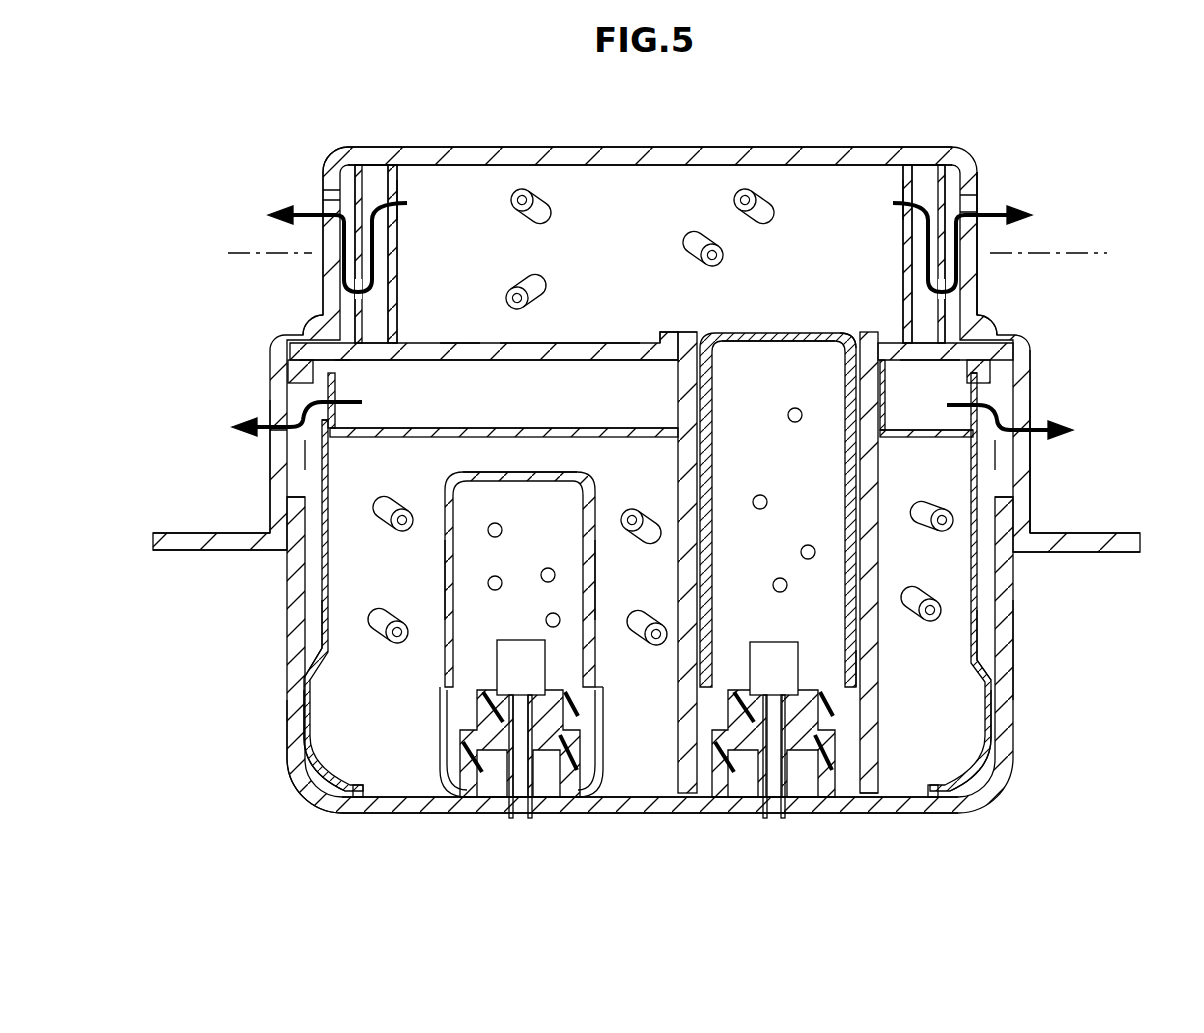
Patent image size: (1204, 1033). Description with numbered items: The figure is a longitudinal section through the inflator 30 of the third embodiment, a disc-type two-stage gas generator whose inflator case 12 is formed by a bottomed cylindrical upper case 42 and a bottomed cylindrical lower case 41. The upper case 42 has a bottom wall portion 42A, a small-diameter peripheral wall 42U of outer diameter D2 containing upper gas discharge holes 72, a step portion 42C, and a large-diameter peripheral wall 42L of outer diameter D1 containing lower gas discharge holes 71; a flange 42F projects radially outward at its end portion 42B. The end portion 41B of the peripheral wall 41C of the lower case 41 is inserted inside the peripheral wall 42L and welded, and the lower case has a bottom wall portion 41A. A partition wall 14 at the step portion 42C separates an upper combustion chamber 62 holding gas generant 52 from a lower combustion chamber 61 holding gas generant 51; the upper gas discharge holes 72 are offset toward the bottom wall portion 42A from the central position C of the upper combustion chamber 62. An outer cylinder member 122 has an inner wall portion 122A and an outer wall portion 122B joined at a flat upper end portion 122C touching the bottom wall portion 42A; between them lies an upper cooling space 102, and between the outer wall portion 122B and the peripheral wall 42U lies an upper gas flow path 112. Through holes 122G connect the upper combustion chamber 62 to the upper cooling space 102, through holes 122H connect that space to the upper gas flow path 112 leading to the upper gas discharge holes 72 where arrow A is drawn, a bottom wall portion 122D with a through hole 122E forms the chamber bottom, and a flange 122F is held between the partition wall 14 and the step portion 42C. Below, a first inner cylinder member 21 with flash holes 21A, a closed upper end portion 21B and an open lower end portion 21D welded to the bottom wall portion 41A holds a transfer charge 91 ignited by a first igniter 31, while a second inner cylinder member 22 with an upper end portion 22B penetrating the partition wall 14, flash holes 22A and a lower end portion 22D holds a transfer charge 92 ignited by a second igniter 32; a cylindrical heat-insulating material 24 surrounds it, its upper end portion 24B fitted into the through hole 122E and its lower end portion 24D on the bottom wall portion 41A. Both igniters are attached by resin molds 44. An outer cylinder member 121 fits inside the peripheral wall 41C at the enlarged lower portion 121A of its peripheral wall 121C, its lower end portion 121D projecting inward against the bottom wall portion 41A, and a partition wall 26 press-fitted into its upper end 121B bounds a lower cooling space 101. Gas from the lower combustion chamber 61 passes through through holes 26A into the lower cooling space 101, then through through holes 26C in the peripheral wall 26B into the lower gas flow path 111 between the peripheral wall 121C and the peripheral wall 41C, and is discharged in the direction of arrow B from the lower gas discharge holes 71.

The inflator case 12 is at (226, 603).
The partition wall 14 is at (618, 362).
The first inner cylinder member 21 is at (446, 516).
The flash holes 21A is at (445, 615).
The upper end portion 21B is at (500, 472).
The lower end portion 21D is at (600, 772).
The second inner cylinder member 22 is at (720, 333).
The flash holes 22A is at (818, 333).
The upper end portion 22B is at (846, 333).
The lower end portion 22D is at (862, 775).
The heat-insulating material 24 is at (678, 478).
The upper end portion 24B is at (690, 332).
The lower end portion 24D is at (865, 798).
The partition wall 26 is at (495, 428).
The through holes 26A is at (525, 427).
The peripheral wall 26B is at (290, 372).
The through holes 26C is at (300, 398).
The inflator 30 is at (265, 107).
The first igniter 31 is at (500, 645).
The second igniter 32 is at (765, 640).
The lower case 41 is at (683, 814).
The bottom wall portion 41A is at (616, 814).
The end portion 41B is at (294, 500).
The peripheral wall 41C is at (1012, 650).
The upper case 42 is at (752, 147).
The bottom wall portion 42A is at (568, 146).
The end portion 42B is at (274, 556).
The step portion 42C is at (286, 342).
The flange 42F is at (170, 533).
The peripheral wall 42L is at (1033, 470).
The peripheral wall 42U is at (978, 268).
The resin molds 44 is at (487, 778).
The gas generant 51 is at (385, 655).
The gas generant 52 is at (548, 212).
The lower combustion chamber 61 is at (395, 814).
The upper combustion chamber 62 is at (665, 180).
The lower gas discharge holes 71 is at (282, 440).
The upper gas discharge holes 72 is at (332, 208).
The transfer charge 91 is at (546, 568).
The transfer charge 92 is at (762, 495).
The lower cooling space 101 is at (456, 369).
The upper cooling space 102 is at (386, 183).
The lower gas flow path 111 is at (305, 455).
The upper gas flow path 112 is at (338, 183).
The outer cylinder member 121 is at (329, 551).
The lower portion 121A is at (300, 710).
The upper end 121B is at (334, 426).
The peripheral wall 121C is at (296, 640).
The lower end portion 121D is at (347, 798).
The outer cylinder member 122 is at (399, 250).
The inner wall portion 122A is at (400, 303).
The outer wall portion 122B is at (328, 195).
The upper end portion 122C is at (370, 165).
The bottom wall portion 122D is at (562, 340).
The through hole 122E is at (668, 332).
The flange 122F is at (340, 360).
The through holes 122G is at (400, 196).
The through holes 122H is at (320, 290).
The gas flow A is at (649, 247).
The arrow B is at (654, 420).
The central position C is at (1090, 252).
The outer diameter D1 is at (1033, 362).
The outer diameter D2 is at (980, 292).